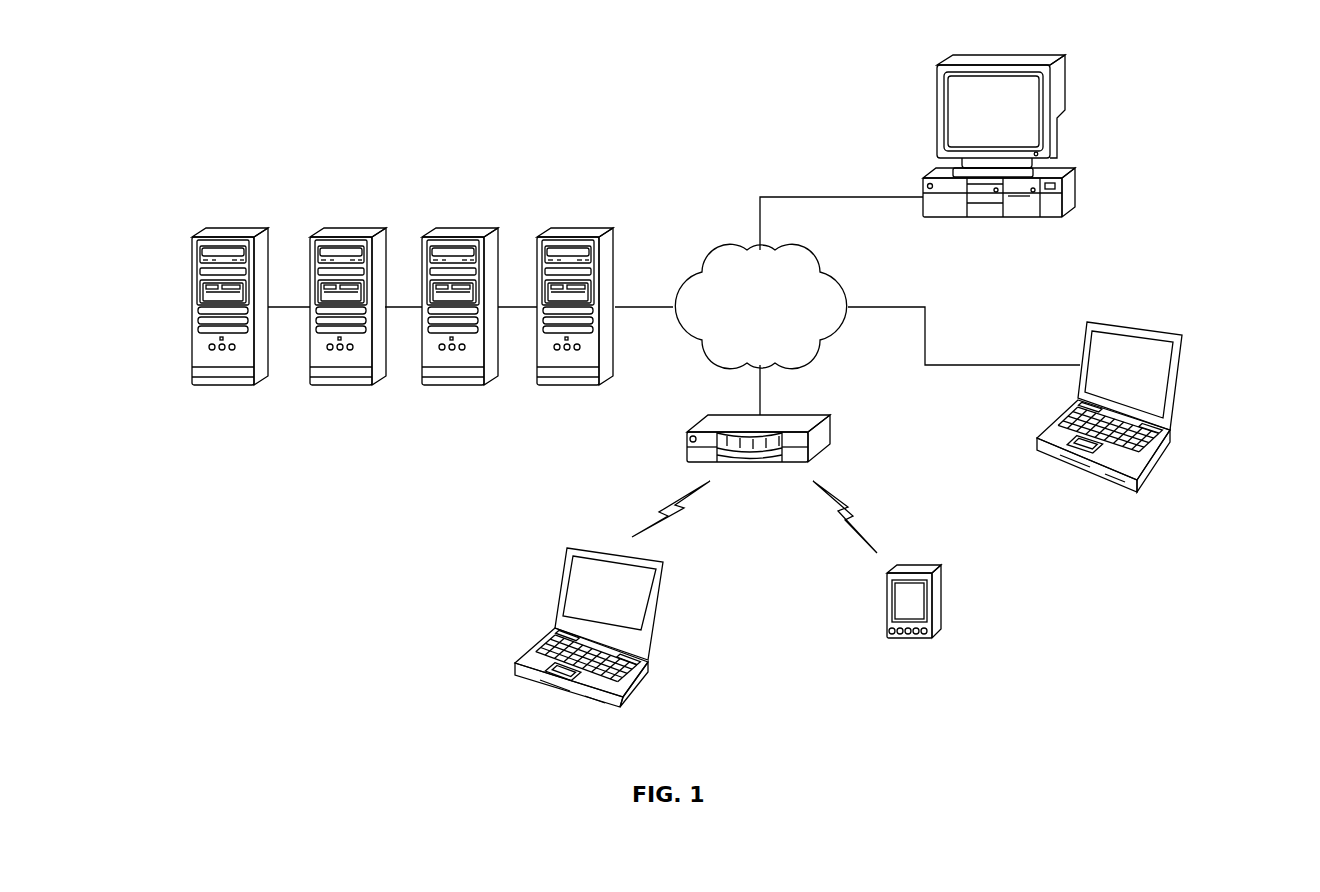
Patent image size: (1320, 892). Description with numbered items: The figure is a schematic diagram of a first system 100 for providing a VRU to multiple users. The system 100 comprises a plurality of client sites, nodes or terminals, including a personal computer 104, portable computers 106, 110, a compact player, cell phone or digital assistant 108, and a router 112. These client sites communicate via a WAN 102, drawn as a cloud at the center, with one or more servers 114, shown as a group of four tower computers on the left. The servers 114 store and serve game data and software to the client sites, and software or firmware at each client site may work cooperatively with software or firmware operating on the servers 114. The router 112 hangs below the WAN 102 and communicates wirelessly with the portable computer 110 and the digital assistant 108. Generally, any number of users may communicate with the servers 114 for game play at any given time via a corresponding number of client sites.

The system 100 is at (626, 127).
The WAN 102 is at (808, 252).
The personal computer 104 is at (1077, 187).
The portable computer 106 is at (1178, 380).
The compact player, cell phone or digital assistant 108 is at (942, 600).
The portable computer 110 is at (645, 668).
The router 112 is at (817, 442).
The servers 114 is at (598, 404).